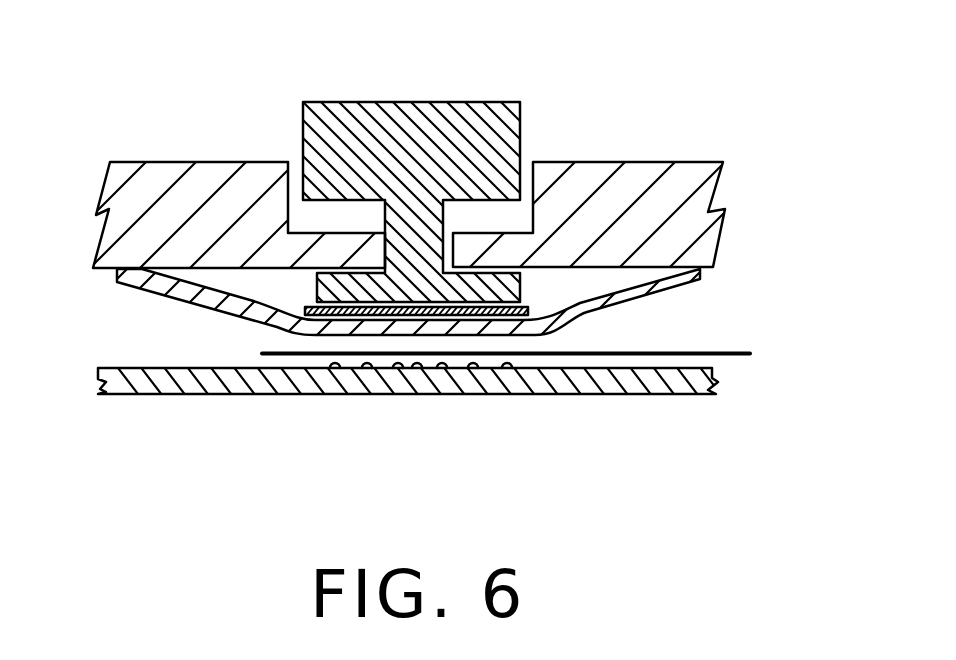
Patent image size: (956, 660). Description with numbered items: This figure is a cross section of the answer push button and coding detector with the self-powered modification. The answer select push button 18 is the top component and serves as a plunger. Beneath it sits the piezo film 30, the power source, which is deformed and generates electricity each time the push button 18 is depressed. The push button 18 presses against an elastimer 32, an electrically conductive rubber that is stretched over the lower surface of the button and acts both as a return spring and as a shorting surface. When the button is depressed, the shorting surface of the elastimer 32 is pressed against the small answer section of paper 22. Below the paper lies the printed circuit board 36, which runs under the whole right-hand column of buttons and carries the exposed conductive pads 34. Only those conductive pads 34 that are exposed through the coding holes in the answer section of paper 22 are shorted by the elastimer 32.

The answer select push button 18 is at (472, 100).
The piezo film 30 is at (305, 310).
The elastimer 32 is at (640, 294).
The answer section of paper 22 is at (541, 358).
The printed circuit board 36 is at (173, 386).
The conductive pads on P.C.B. 34 is at (422, 367).